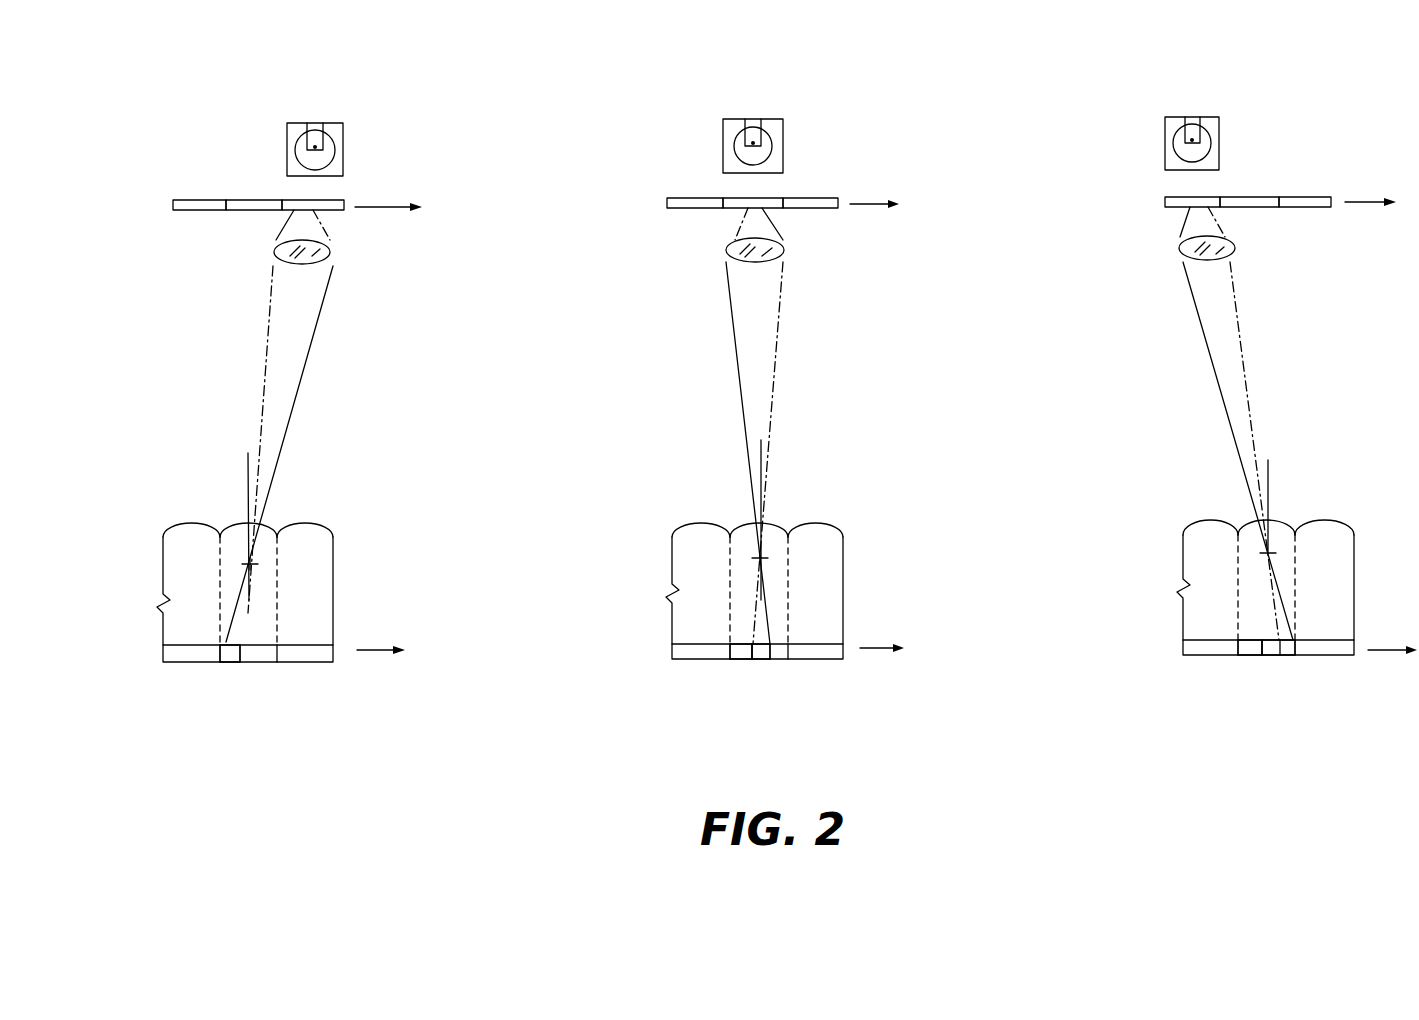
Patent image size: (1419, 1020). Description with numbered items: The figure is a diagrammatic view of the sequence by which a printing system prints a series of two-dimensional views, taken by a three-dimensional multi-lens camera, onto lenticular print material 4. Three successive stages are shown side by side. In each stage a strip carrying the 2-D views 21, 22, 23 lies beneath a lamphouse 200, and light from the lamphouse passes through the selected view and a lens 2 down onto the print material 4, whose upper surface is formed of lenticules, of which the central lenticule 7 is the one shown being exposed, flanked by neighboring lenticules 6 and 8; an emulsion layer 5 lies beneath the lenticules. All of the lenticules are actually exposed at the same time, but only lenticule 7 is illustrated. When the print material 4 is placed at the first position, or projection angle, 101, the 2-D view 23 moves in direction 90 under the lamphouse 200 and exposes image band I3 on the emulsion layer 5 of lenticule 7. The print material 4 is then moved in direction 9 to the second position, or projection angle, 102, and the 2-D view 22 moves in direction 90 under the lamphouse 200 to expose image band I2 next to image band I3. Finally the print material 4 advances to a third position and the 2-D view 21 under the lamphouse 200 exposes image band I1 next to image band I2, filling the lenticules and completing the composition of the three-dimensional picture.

The lens 2 is at (275, 247).
The print material 4 is at (172, 623).
The emulsion layer 5 is at (175, 663).
The first lobe / cell 6 is at (180, 525).
The lenticule 7 is at (240, 526).
The third lobe / cell 8 is at (305, 525).
The direction 9 is at (887, 661).
The 2-D view 21 is at (200, 202).
The 2-D view 22 is at (247, 200).
The 2-D view 23 is at (330, 203).
The direction 90 is at (875, 218).
The position (projection angle) 101 is at (245, 467).
The position (projection angle) 102 is at (763, 482).
The lamphouse 200 is at (327, 124).
The image band I1 is at (1287, 657).
The image band I2 is at (763, 660).
The image band I3 is at (235, 663).